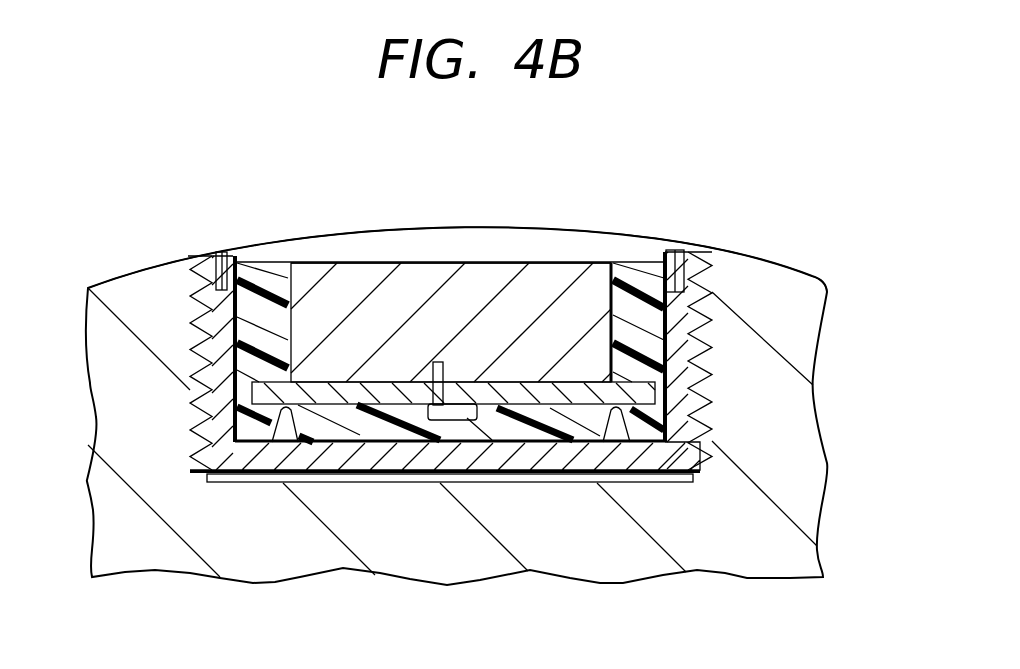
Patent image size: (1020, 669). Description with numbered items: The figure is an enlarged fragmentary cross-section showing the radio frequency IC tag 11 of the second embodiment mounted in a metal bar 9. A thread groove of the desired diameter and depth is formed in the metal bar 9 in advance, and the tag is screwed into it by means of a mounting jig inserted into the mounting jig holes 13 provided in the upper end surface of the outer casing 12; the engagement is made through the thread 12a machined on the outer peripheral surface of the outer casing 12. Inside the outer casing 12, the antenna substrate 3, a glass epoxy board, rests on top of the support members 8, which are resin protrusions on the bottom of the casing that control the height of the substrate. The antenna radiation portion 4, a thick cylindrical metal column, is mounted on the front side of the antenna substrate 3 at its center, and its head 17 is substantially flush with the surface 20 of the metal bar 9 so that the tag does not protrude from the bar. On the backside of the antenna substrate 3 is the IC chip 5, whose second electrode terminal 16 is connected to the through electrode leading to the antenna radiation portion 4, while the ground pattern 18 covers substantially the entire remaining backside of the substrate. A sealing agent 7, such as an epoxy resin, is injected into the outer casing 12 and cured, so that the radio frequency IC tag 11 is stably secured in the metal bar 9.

The surface of the metal bar 20 is at (160, 262).
The mounting jig holes 13 is at (220, 250).
The radio frequency IC tag 11 is at (350, 258).
The antenna radiation portion 4 is at (493, 282).
The head 17 is at (547, 263).
The sealing agent 7 is at (640, 263).
The metal bar 9 is at (777, 249).
The thread 12a is at (712, 310).
The outer casing 12 is at (712, 372).
The antenna substrate 3 is at (655, 397).
The support members 8 is at (665, 405).
The second electrode terminal 16 is at (427, 420).
The IC chip 5 is at (460, 407).
The ground pattern 18 is at (577, 407).